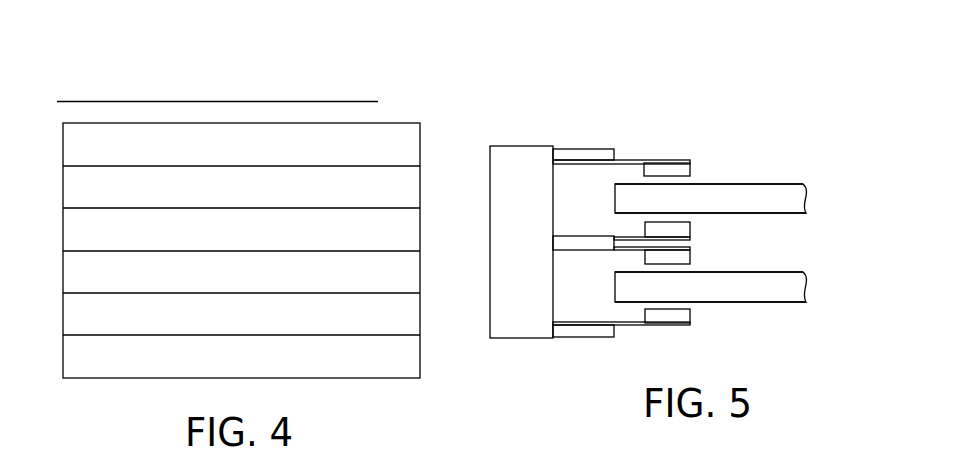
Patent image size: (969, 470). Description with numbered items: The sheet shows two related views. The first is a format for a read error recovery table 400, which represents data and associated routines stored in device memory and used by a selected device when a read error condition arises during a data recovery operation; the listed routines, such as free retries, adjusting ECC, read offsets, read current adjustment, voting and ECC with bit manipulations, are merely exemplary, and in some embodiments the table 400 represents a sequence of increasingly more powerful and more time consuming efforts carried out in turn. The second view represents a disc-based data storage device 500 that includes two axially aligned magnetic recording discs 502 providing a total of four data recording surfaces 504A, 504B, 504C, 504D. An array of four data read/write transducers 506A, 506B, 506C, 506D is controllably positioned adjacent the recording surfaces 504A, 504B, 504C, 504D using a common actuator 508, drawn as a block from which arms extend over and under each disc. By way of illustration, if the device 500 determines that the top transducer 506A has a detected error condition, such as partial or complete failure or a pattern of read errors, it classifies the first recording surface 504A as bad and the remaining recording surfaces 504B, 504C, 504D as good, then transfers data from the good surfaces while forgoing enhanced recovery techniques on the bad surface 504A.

In FIG. 4, the read error recovery table 400 is at (303, 52).
In FIG. 5, the disc-based data storage device 500 is at (738, 102).
In FIG. 5, the magnetic recording discs 502 is at (627, 197).
In FIG. 5, the data recording surface 504A is at (778, 183).
In FIG. 5, the data recording surface 504B is at (778, 213).
In FIG. 5, the data recording surface 504C is at (778, 273).
In FIG. 5, the data recording surface 504D is at (778, 303).
In FIG. 5, the data read/write transducer 506A is at (668, 168).
In FIG. 5, the data read/write transducer 506B is at (680, 227).
In FIG. 5, the data read/write transducer 506C is at (680, 257).
In FIG. 5, the data read/write transducer 506D is at (667, 320).
In FIG. 5, the actuator 508 is at (523, 151).